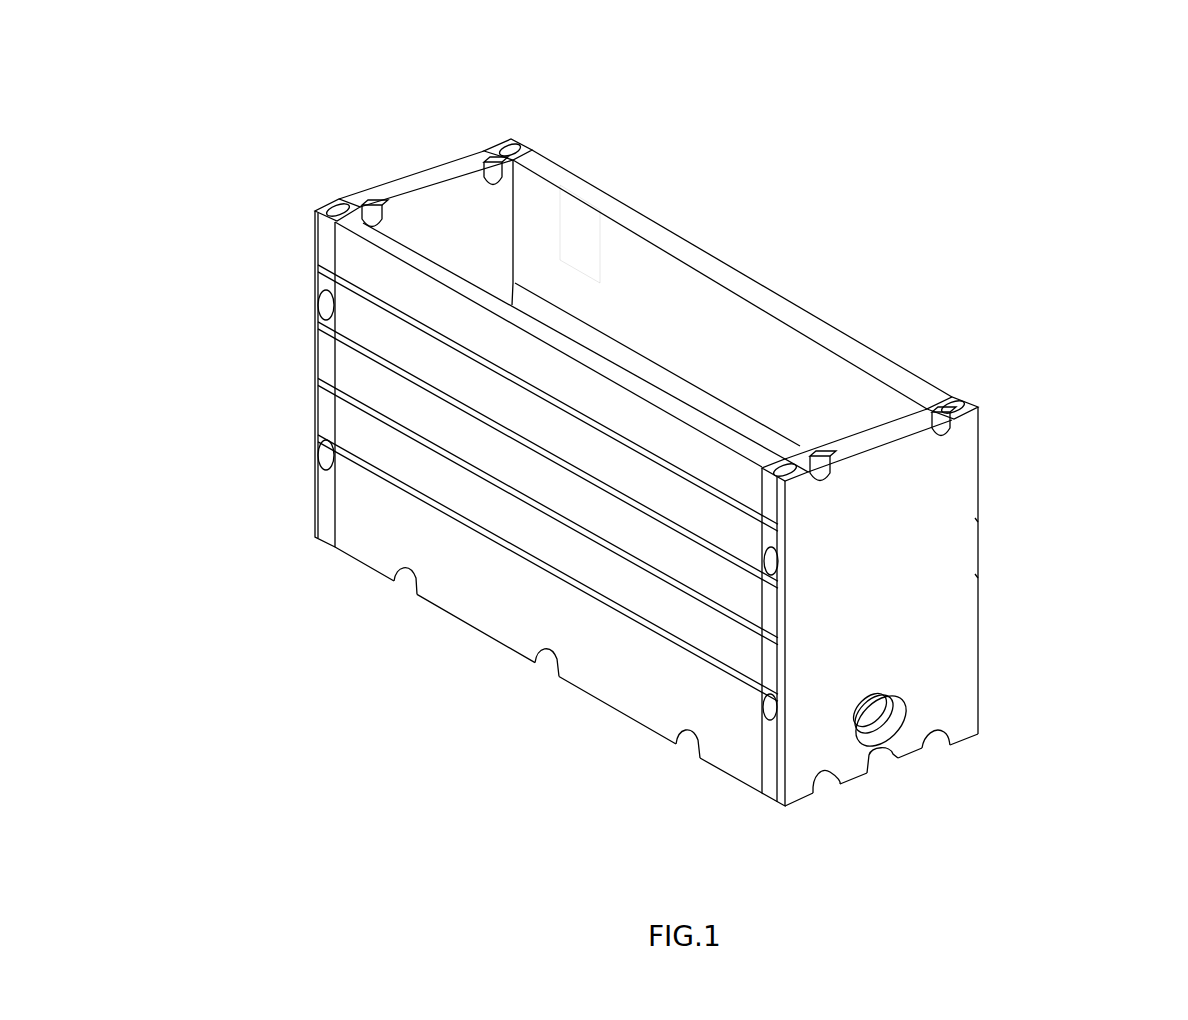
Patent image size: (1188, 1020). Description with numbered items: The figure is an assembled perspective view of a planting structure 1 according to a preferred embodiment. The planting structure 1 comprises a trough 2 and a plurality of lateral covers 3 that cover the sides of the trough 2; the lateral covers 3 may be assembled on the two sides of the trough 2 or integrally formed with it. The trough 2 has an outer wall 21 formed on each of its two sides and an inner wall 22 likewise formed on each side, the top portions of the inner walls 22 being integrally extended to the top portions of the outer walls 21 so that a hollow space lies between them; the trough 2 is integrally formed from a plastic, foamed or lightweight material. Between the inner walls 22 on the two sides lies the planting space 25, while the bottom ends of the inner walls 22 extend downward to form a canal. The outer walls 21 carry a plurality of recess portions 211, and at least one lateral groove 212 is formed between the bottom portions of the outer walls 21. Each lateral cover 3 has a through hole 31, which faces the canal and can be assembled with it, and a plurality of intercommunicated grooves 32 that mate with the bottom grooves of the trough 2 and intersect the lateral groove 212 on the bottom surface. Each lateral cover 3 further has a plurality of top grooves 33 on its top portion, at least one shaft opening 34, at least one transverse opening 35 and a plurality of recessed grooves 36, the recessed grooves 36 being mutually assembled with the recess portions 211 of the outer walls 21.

The planting structure 1 is at (1046, 283).
The trough 2 is at (693, 245).
The outer wall 21 is at (510, 613).
The recess portion 211 is at (643, 622).
The lateral groove 212 is at (678, 740).
The inner wall 22 is at (806, 326).
The planting space 25 is at (595, 267).
The lateral cover 3 is at (447, 223).
The through hole 31 is at (873, 725).
The intercommunicated groove 32 is at (828, 780).
The top groove 33 is at (367, 202).
The shaft opening 34 is at (512, 140).
The transverse opening 35 is at (320, 451).
The recessed groove 36 is at (317, 268).